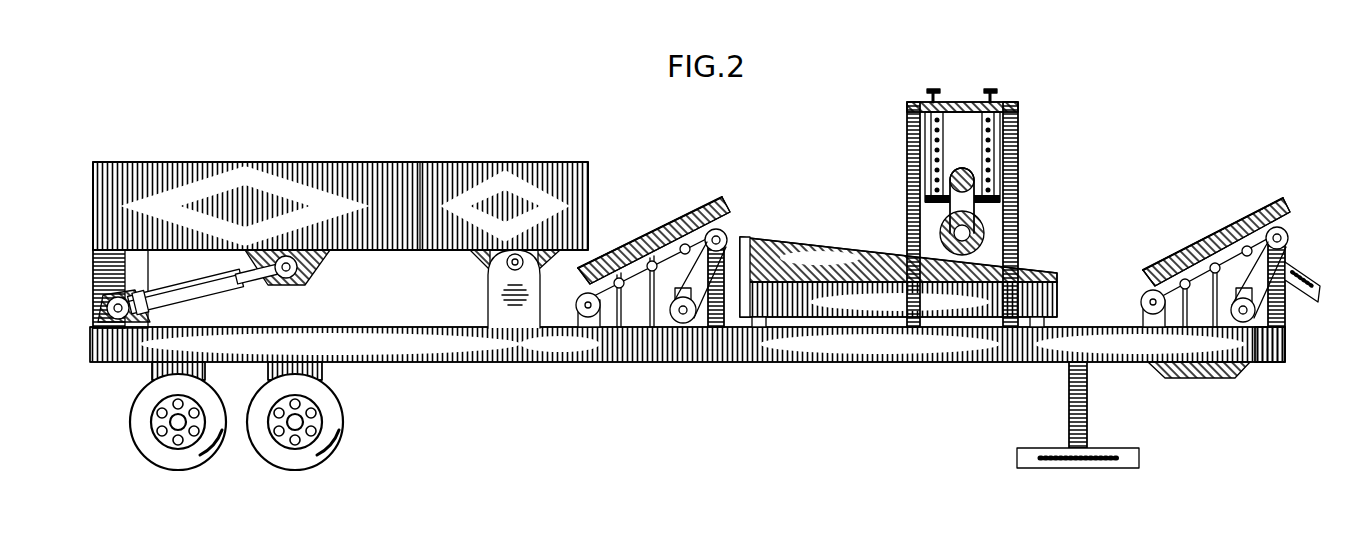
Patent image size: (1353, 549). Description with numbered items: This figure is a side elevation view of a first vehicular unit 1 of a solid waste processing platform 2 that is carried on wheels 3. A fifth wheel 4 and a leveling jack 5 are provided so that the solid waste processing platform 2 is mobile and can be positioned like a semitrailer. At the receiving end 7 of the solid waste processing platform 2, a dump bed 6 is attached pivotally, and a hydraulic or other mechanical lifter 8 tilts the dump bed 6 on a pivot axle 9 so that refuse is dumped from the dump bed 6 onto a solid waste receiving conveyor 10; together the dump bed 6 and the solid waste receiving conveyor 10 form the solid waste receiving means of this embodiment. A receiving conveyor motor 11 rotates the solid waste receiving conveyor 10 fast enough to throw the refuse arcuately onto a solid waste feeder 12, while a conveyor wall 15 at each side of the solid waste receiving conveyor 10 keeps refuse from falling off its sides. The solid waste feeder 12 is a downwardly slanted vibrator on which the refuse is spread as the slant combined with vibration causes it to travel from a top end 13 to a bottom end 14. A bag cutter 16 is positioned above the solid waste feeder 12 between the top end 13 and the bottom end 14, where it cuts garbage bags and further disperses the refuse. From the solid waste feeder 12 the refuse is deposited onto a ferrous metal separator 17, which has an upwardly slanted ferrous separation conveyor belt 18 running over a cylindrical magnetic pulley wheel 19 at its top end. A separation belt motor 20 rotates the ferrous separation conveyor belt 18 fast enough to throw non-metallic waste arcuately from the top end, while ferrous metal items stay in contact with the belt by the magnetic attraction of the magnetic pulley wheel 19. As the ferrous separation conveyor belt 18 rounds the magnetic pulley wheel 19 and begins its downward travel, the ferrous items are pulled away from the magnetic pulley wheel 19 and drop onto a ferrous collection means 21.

The first vehicular unit 1 is at (1268, 42).
The solid waste processing platform 2 is at (752, 347).
The wheels 3 is at (258, 418).
The fifth wheel 4 is at (1190, 378).
The leveling jack 5 is at (1087, 415).
The dump bed 6 is at (352, 162).
The receiving end 7 is at (93, 362).
The hydraulic or other mechanical lifter 8 is at (225, 292).
The pivot axle 9 is at (512, 268).
The solid waste receiving conveyor 10 is at (628, 248).
The receiving conveyor motor 11 is at (683, 325).
The solid waste feeder 12 is at (817, 243).
The top end 13 is at (740, 237).
The bottom end 14 is at (1140, 283).
The conveyor wall 15 is at (694, 224).
The bag cutter 16 is at (960, 66).
The ferrous metal separator 17 is at (1213, 159).
The ferrous separation conveyor belt 18 is at (1240, 246).
The cylindrical magnetic pulley wheel 19 is at (1290, 235).
The separation belt motor 20 is at (1265, 362).
The ferrous collection means 21 is at (1307, 293).